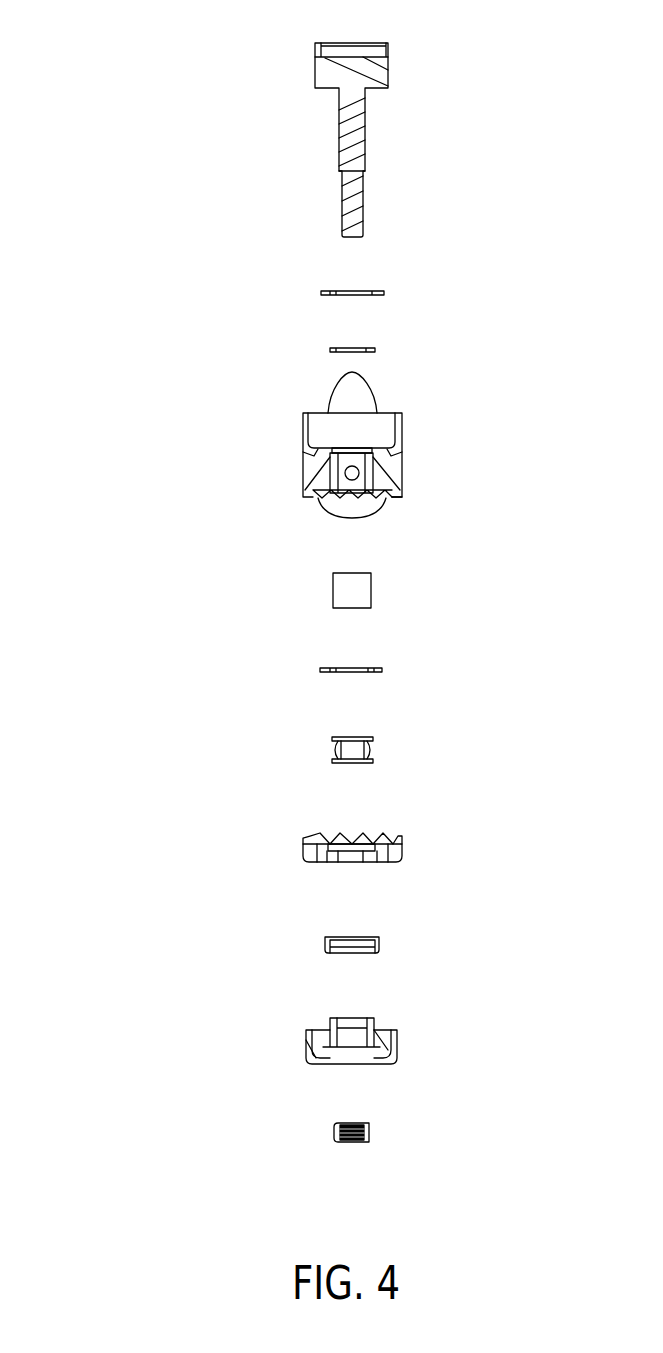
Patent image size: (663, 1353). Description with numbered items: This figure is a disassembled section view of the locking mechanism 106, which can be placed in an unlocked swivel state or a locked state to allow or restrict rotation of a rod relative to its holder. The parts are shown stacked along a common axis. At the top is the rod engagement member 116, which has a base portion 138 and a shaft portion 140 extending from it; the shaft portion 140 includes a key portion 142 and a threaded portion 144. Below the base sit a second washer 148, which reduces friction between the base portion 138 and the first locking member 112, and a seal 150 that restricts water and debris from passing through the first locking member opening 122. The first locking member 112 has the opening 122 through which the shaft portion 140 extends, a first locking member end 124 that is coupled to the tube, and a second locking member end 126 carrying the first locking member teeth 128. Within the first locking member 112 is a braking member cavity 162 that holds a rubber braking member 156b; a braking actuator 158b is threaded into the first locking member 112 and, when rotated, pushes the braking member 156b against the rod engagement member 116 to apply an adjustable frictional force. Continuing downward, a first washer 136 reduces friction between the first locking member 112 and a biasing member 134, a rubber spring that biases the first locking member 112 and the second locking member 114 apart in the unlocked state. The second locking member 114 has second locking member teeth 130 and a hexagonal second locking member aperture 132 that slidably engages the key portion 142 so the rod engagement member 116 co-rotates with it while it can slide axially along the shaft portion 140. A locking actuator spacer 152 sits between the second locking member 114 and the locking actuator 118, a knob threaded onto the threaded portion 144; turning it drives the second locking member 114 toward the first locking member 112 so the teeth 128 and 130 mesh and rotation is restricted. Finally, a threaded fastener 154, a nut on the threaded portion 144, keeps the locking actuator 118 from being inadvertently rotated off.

The locking mechanism 106 is at (128, 192).
The first locking member 112 is at (400, 471).
The second locking member 114 is at (312, 850).
The rod engagement member 116 is at (386, 75).
The locking actuator 118 is at (386, 1046).
The first locking member opening 122 is at (333, 455).
The first locking member end 124 is at (367, 423).
The second locking member end 126 is at (398, 499).
The first locking member teeth 128 is at (312, 498).
The second locking member teeth 130 is at (312, 840).
The second locking member aperture 132 is at (350, 856).
The biasing member 134 is at (374, 760).
The first washer 136 is at (383, 670).
The base portion 138 is at (320, 76).
The shaft portion 140 is at (358, 97).
The key portion 142 is at (338, 148).
The threaded portion 144 is at (342, 206).
The second washer 148 is at (321, 292).
The seal 150 is at (376, 350).
The locking actuator spacer 152 is at (380, 950).
The threaded fastener 154 is at (371, 1135).
The braking member 156b is at (347, 606).
The braking actuator 158b is at (348, 407).
The braking member cavity 162 is at (330, 467).